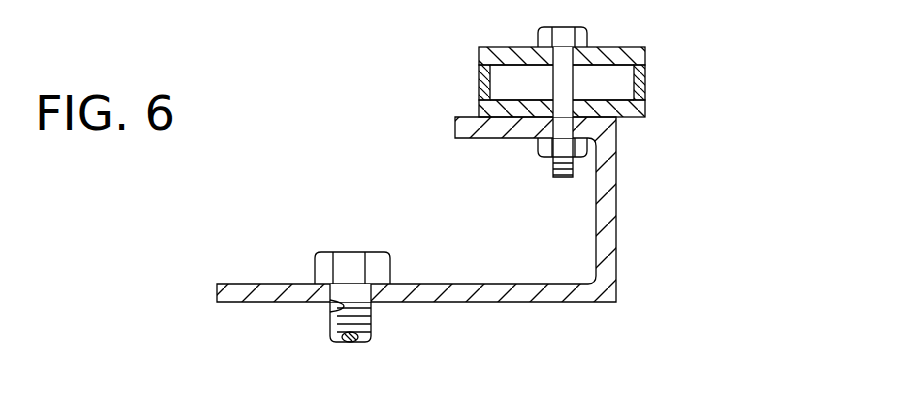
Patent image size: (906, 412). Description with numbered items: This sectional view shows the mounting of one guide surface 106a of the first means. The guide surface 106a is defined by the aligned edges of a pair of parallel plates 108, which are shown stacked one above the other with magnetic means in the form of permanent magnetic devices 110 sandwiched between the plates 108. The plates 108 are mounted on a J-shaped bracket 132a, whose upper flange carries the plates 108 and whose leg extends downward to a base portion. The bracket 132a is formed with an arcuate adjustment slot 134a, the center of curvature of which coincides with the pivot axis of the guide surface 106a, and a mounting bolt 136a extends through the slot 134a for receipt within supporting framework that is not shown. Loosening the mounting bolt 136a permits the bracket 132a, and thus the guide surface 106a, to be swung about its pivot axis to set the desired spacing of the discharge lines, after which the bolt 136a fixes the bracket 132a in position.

The guide surface 106a is at (562, 102).
The plate 108 is at (480, 57).
The permanent magnetic device 110 is at (481, 84).
The J-shaped bracket 132a is at (617, 245).
The arcuate adjustment slot 134a is at (343, 312).
The mounting bolt 136a is at (352, 252).